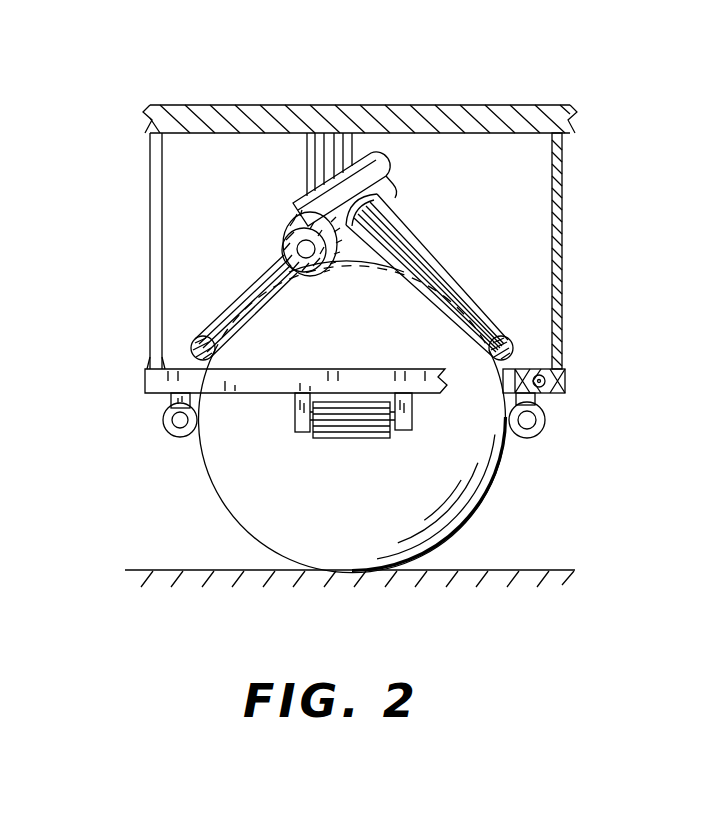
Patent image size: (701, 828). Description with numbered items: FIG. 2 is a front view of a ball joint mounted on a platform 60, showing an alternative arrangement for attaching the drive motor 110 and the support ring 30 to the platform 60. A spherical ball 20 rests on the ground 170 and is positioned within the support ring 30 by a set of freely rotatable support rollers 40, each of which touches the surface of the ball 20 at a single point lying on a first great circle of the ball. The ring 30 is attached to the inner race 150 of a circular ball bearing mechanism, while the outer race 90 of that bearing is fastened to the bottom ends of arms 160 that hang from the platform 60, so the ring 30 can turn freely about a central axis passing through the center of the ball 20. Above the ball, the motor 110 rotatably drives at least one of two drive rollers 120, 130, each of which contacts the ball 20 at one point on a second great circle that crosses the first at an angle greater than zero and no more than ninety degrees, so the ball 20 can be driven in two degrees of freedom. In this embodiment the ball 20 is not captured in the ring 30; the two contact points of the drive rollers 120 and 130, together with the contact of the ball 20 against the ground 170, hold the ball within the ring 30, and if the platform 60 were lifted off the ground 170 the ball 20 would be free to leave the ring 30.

The spherical ball 20 is at (300, 530).
The support ring 30 is at (147, 382).
The support rollers 40 is at (340, 438).
The platform 60 is at (475, 104).
The outer race 90 is at (566, 381).
The motor 110 is at (298, 210).
The drive roller 120 is at (230, 305).
The drive roller 130 is at (470, 300).
The inner race 150 is at (532, 369).
The arms 160 is at (562, 186).
The ground 170 is at (358, 573).